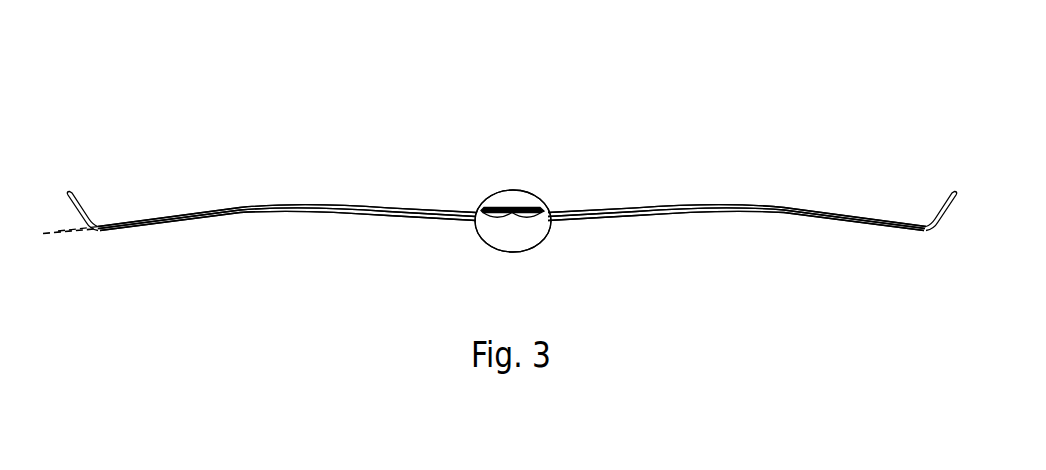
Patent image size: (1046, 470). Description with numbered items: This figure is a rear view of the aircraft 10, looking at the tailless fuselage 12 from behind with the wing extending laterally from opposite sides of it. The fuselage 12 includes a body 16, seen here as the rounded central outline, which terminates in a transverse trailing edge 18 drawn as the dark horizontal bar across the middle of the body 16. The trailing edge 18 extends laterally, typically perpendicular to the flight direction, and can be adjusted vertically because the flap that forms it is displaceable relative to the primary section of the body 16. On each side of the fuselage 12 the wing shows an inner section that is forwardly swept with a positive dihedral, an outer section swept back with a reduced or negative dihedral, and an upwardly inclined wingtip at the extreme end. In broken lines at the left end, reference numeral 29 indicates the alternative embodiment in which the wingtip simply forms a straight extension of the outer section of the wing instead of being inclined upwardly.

The aircraft 10 is at (434, 74).
The tailless fuselage 12 is at (500, 172).
The body 16 is at (561, 258).
The transverse trailing edge 18 is at (541, 208).
The wingtip extension 29 is at (68, 259).